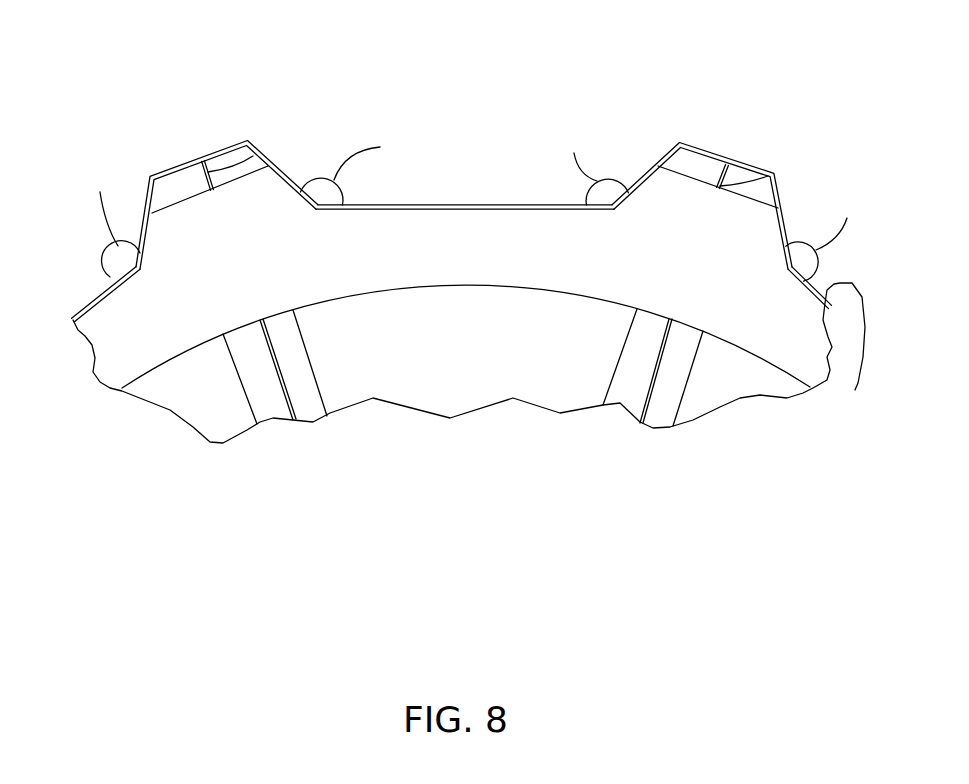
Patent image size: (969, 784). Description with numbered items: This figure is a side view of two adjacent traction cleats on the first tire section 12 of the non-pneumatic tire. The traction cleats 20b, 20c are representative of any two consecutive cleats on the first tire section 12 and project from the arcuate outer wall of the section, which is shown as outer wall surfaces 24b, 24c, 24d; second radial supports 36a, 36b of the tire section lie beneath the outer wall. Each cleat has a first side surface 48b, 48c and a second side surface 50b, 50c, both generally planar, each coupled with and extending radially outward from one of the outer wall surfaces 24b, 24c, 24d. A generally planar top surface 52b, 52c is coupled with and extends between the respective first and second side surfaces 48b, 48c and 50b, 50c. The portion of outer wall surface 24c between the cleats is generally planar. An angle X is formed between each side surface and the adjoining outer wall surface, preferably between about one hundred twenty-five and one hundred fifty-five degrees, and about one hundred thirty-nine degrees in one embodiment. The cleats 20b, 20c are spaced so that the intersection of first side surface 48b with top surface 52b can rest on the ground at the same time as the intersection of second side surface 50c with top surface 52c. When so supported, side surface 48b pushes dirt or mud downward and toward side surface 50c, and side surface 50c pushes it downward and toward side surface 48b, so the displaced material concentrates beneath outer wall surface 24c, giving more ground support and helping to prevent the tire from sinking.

The first tire section 12 is at (515, 148).
The traction cleat 20b is at (212, 171).
The traction cleat 20c is at (753, 175).
The outer wall surface 24b is at (93, 303).
The outer wall surface 24c is at (444, 204).
The outer wall surface 24d is at (856, 388).
The second radial support 36a is at (250, 146).
The second radial support 36b is at (773, 172).
The first side surface 48b is at (293, 182).
The first side surface 48c is at (788, 213).
The second side surface 50b is at (150, 202).
The second side surface 50c is at (662, 152).
The top surface 52b is at (186, 158).
The top surface 52c is at (715, 150).